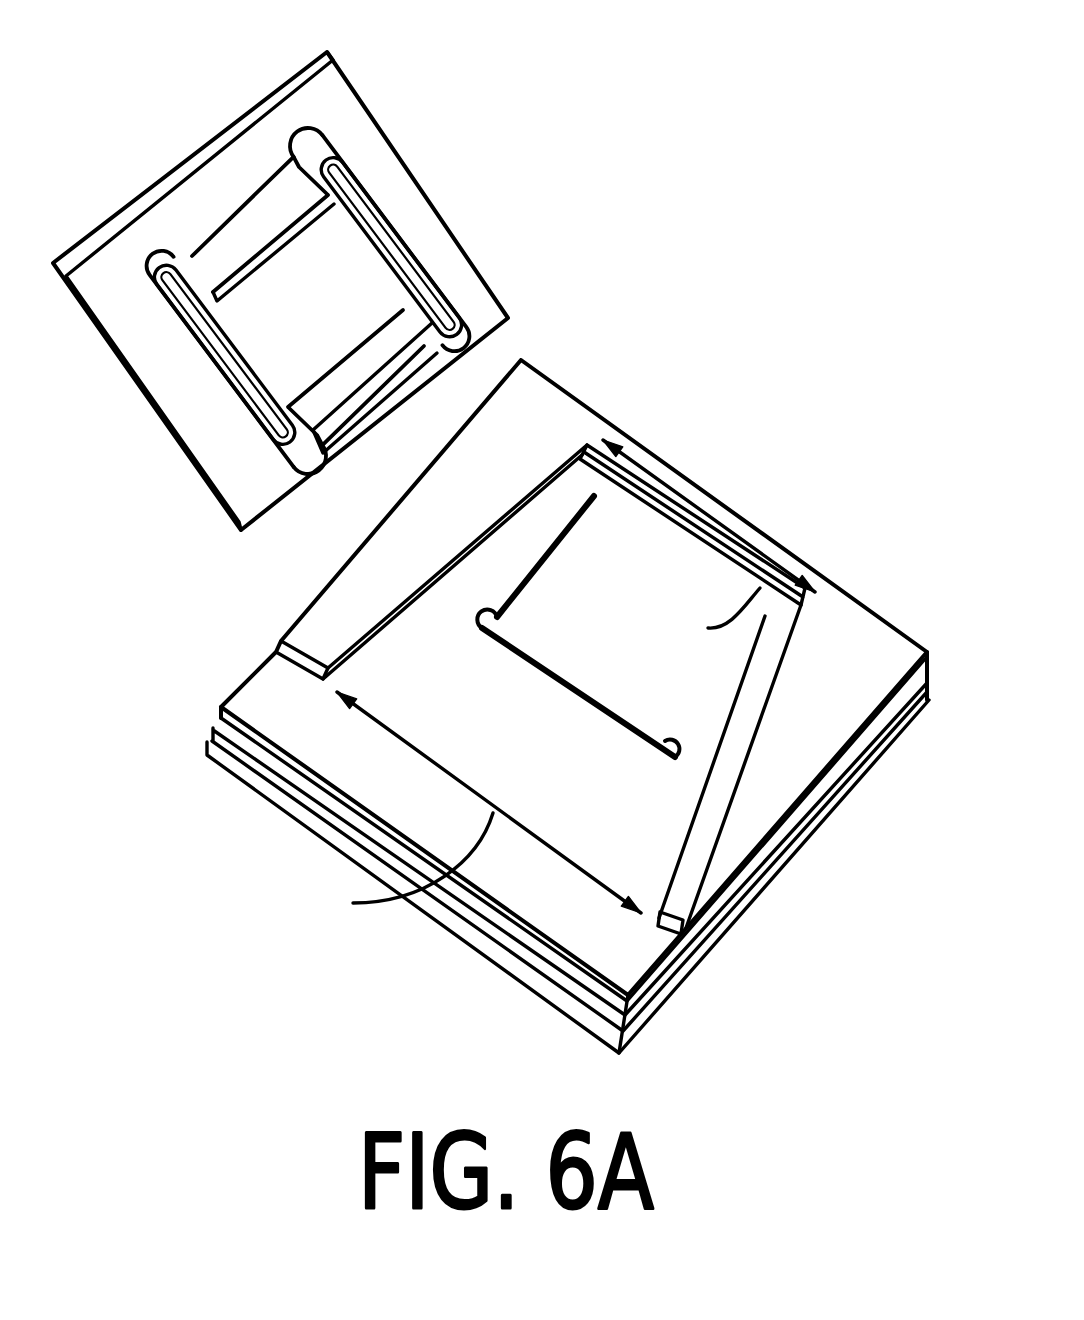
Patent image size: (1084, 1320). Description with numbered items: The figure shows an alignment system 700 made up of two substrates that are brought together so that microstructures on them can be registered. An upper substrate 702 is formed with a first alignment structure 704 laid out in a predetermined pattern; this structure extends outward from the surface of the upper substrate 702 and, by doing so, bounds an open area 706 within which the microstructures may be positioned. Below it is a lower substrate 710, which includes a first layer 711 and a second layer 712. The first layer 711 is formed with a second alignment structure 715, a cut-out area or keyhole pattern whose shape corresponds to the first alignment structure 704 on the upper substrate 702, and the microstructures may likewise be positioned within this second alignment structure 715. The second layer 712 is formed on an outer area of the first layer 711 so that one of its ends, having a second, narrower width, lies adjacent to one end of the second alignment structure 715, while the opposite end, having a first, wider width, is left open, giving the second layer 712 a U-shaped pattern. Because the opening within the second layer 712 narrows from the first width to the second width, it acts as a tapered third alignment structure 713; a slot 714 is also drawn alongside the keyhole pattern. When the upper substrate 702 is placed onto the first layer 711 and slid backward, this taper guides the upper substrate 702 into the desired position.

The assembly 700 is at (642, 190).
The upper substrate 702 is at (408, 202).
The first alignment structure 704 is at (233, 238).
The open area 706 is at (263, 353).
The lower substrate 710 is at (312, 830).
The first layer 711 is at (300, 738).
The second layer 712 is at (530, 410).
The raised frame 713 is at (783, 560).
The first slot 714 is at (644, 547).
The second alignment structure 715 is at (600, 660).